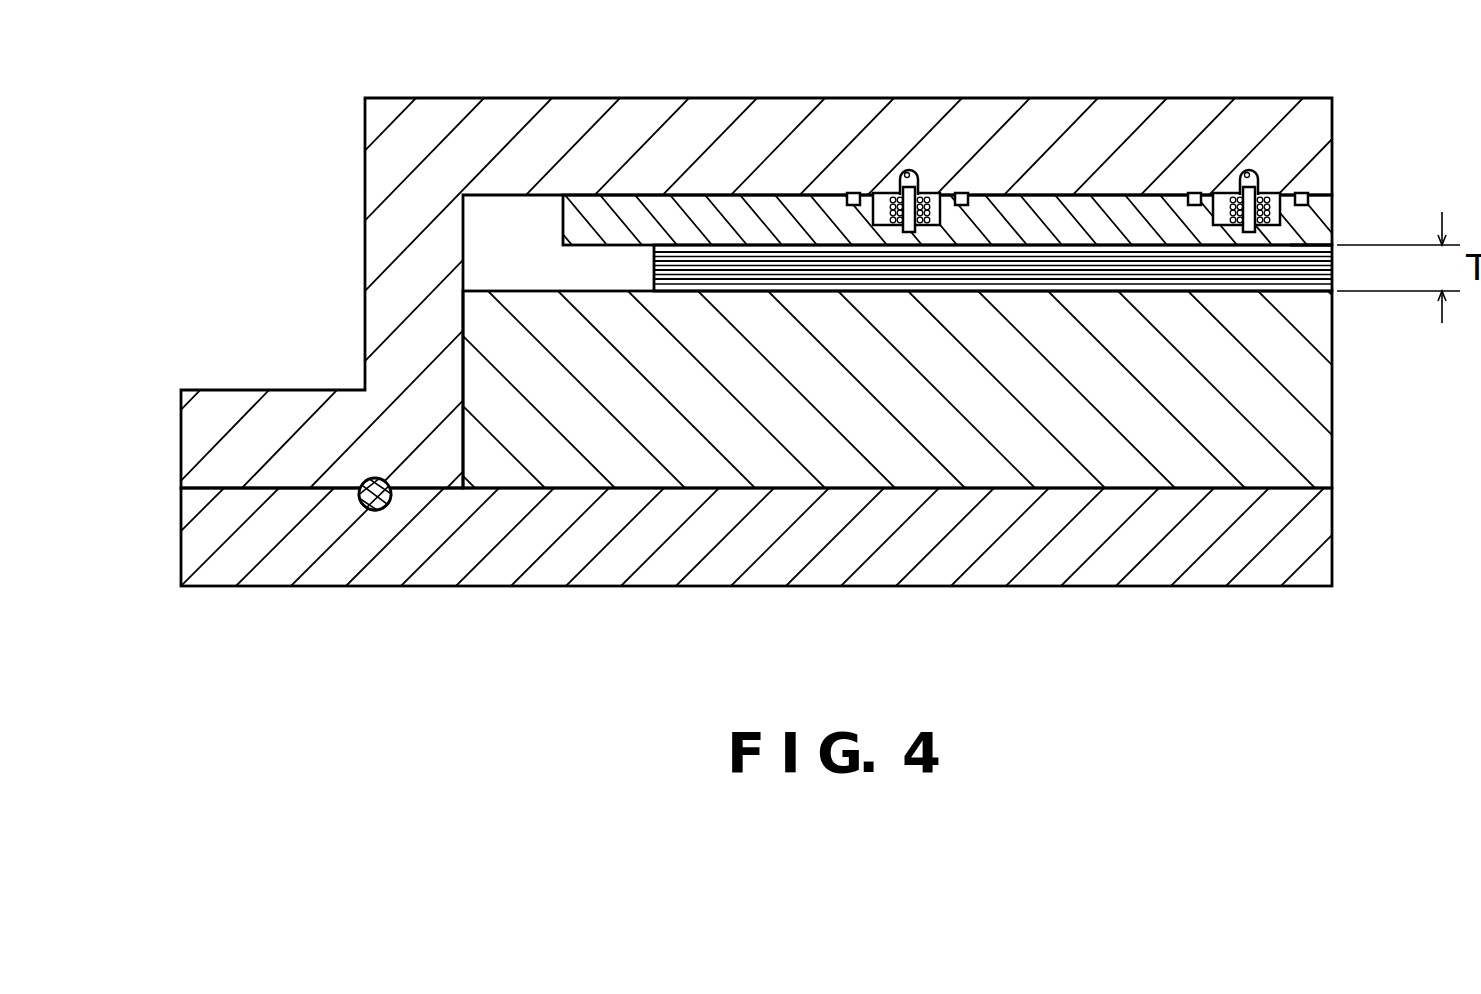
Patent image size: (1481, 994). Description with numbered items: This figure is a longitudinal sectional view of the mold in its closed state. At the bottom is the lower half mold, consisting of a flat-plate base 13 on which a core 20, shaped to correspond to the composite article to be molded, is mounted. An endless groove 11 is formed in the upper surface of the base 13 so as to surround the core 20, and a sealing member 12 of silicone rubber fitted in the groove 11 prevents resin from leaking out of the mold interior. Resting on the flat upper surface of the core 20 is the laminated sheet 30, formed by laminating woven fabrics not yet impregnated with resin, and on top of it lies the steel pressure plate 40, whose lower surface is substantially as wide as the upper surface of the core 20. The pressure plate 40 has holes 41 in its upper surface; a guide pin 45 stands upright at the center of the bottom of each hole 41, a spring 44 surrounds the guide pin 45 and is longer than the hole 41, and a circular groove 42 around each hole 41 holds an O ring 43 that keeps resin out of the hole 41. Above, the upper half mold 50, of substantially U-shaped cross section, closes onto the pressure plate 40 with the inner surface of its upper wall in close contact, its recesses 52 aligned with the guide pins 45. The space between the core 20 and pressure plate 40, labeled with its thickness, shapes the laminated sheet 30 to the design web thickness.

The groove 11 is at (380, 507).
The sealing member 12 is at (363, 497).
The base 13 is at (556, 553).
The core 20 is at (1307, 408).
The laminated sheet 30 is at (1297, 278).
The pressure plate 40 is at (1033, 203).
The hole 41 is at (1217, 193).
The circular groove 42 is at (1316, 215).
The O ring 43 is at (1307, 192).
The spring 44 is at (1273, 193).
The guide pin 45 is at (1242, 172).
The upper half mold 50 is at (715, 122).
The recess 52 is at (899, 167).